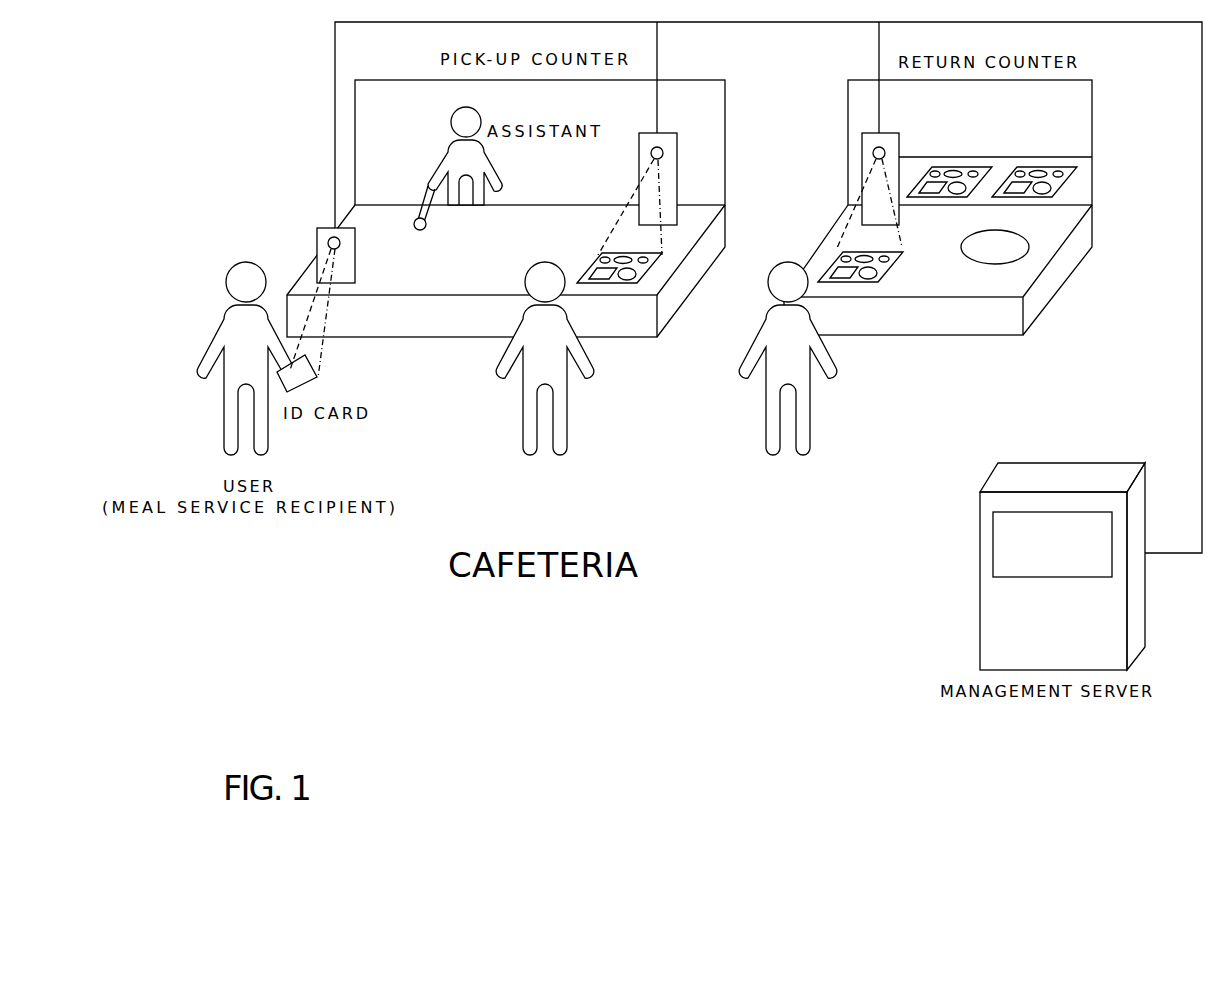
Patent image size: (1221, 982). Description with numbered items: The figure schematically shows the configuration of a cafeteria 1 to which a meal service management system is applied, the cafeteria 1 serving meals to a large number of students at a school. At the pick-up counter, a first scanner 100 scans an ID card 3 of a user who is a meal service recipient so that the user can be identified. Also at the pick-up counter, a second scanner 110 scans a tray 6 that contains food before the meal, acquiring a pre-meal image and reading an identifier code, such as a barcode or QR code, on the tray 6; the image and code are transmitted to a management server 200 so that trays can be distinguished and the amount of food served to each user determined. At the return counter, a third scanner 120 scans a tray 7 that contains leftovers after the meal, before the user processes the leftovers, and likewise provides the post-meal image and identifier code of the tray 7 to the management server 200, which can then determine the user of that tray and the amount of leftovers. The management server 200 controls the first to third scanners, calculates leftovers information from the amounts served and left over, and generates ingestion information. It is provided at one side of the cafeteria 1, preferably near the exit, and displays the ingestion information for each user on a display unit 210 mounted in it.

The cafeteria 1 is at (268, 70).
The first scanner 100 is at (315, 240).
The second scanner 110 is at (677, 157).
The third scanner 120 is at (862, 165).
The ID card 3 is at (317, 378).
The tray before a meal 6 is at (616, 283).
The tray after a meal 7 is at (857, 285).
The management server 200 is at (1029, 546).
The display unit 210 is at (993, 545).